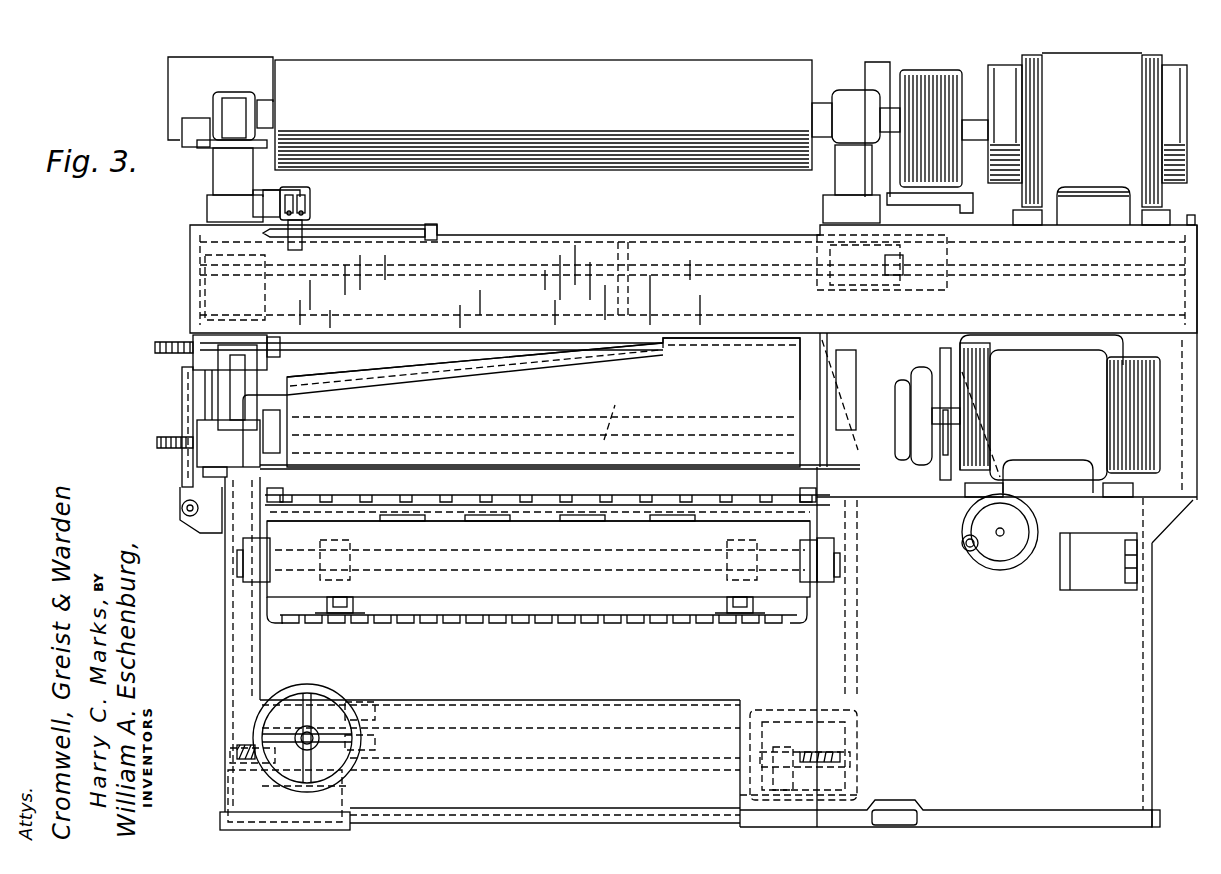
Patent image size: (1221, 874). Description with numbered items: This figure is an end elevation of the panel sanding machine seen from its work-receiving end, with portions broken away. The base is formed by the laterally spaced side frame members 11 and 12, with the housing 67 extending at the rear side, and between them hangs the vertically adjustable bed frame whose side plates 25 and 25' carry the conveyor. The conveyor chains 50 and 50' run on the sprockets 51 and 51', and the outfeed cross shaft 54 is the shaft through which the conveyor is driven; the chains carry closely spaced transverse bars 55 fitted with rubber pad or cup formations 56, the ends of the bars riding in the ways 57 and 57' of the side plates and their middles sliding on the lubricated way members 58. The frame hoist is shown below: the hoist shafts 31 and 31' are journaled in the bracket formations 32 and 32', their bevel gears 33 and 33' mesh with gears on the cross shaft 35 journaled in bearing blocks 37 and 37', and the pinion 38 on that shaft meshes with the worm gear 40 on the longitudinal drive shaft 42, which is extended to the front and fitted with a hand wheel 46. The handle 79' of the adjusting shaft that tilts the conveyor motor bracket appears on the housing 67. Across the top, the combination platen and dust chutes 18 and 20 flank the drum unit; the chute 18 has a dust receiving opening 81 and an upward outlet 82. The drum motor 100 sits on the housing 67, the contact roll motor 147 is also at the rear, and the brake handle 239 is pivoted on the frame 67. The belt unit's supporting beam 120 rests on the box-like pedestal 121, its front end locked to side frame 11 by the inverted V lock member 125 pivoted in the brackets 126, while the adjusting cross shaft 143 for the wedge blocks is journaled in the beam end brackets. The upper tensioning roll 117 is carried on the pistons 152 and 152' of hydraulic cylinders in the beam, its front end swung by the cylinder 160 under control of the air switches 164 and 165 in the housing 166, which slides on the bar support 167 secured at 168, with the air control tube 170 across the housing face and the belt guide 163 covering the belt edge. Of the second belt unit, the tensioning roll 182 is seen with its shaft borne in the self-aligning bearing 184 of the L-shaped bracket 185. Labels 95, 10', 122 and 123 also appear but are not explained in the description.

The side frame member 11 is at (228, 607).
The side frame member 12 is at (845, 624).
The combination work engaging platen and dust collecting chute 18 is at (500, 466).
The combination platen and dust collecting chute 20 is at (350, 378).
The side plate 25 is at (282, 622).
The side plate 25' is at (788, 626).
The hoist shaft 31 is at (228, 755).
The hoist shaft 31' is at (831, 757).
The bracket formation 32 is at (331, 790).
The bracket formation 32' is at (768, 797).
The bevel gear 33 is at (219, 739).
The bevel gear 33' is at (854, 732).
The cross shaft 35 is at (500, 782).
The bearing block 37 is at (259, 796).
The bearing block 37' is at (740, 763).
The pinion 38 is at (360, 718).
The worm gear 40 is at (360, 748).
The drive shaft 42 is at (314, 692).
The hand wheel 46 is at (295, 690).
The chain 50 is at (343, 625).
The chain 50' is at (731, 626).
The sprocket 51 is at (350, 555).
The sprocket 51' is at (715, 555).
The cross shaft 54 is at (556, 574).
The bar 55 is at (510, 624).
The pad or cup formation 56 is at (620, 625).
The recess or way 57 is at (295, 487).
The recess or way 57' is at (781, 487).
The bar or plate member 58 is at (455, 525).
The housing 67 is at (1154, 618).
The handle 79' is at (1000, 545).
The opening 81 is at (720, 396).
The outlet 82 is at (715, 336).
The partition 95 is at (618, 411).
The drive motor 100 is at (1093, 417).
The pulley 10' is at (926, 447).
The upper belt tensioning roll 117 is at (584, 96).
The supporting beam 120 is at (630, 240).
The box-like pedestal 121 is at (976, 367).
The cover 122 is at (1190, 347).
The motor body 123 is at (1165, 380).
The swinging frame or lock member 125 is at (182, 467).
The bearing forming bracket 126 is at (190, 518).
The adjusting cross shaft 143 is at (462, 340).
The drive motor 147 is at (1062, 337).
The piston 152 is at (208, 181).
The piston 152' is at (829, 184).
The pneumatic or hydraulic cylinder 160 is at (190, 118).
The end cover or belt guide member 163 is at (168, 89).
The air operated switch 164 is at (268, 210).
The air operated switch 165 is at (306, 214).
The housing 166 is at (306, 205).
The bar support 167 is at (415, 229).
The bar support end securement 168 is at (438, 230).
The air control tube 170 is at (308, 192).
The belt supporting and tensioning roll 182 is at (866, 66).
The bearing 184 is at (975, 200).
The L-shaped supporting bracket 185 is at (930, 73).
The operating handle 239 is at (955, 405).